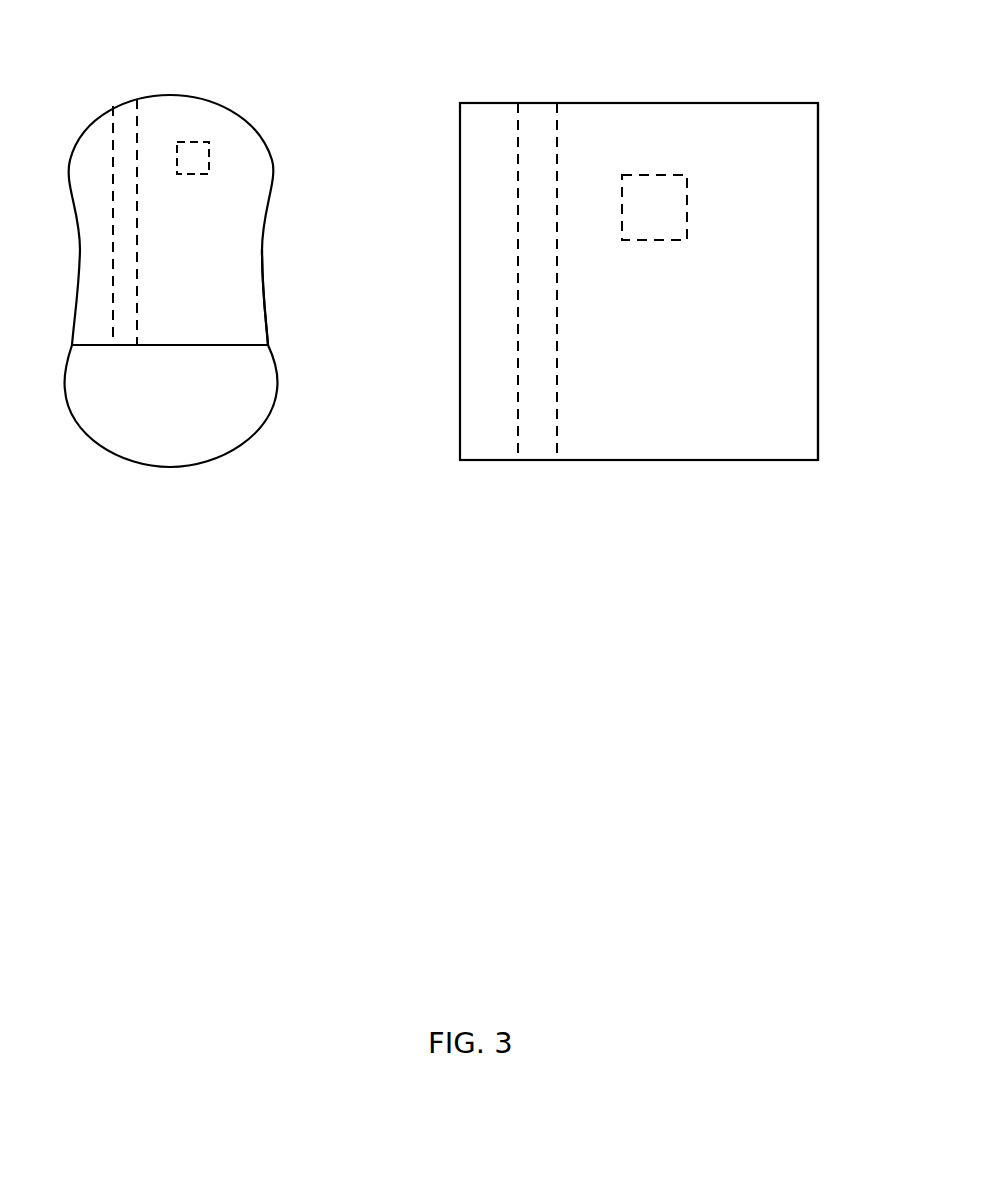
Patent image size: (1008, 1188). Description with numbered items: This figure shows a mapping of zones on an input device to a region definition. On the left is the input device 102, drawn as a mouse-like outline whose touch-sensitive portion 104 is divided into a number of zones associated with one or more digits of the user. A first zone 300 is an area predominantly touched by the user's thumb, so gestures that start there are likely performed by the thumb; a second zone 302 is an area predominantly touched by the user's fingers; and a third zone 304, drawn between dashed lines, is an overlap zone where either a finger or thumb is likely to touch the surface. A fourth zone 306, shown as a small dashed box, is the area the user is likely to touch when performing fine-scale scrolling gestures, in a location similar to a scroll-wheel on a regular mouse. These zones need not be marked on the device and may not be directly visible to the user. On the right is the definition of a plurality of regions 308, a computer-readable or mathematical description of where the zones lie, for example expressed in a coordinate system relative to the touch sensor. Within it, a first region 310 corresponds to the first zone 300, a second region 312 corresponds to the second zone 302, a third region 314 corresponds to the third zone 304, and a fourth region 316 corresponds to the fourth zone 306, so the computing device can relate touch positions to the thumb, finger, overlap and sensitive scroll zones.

The input device 102 is at (137, 467).
The touch-sensitive portion 104 is at (174, 280).
The first zone 300 is at (92, 245).
The second zone 302 is at (257, 281).
The third zone 304 is at (126, 112).
The fourth zone 306 is at (180, 175).
The definition of a plurality of regions 308 is at (722, 83).
The first region 310 is at (473, 112).
The second region 312 is at (812, 420).
The third region 314 is at (538, 112).
The fourth region 316 is at (657, 242).